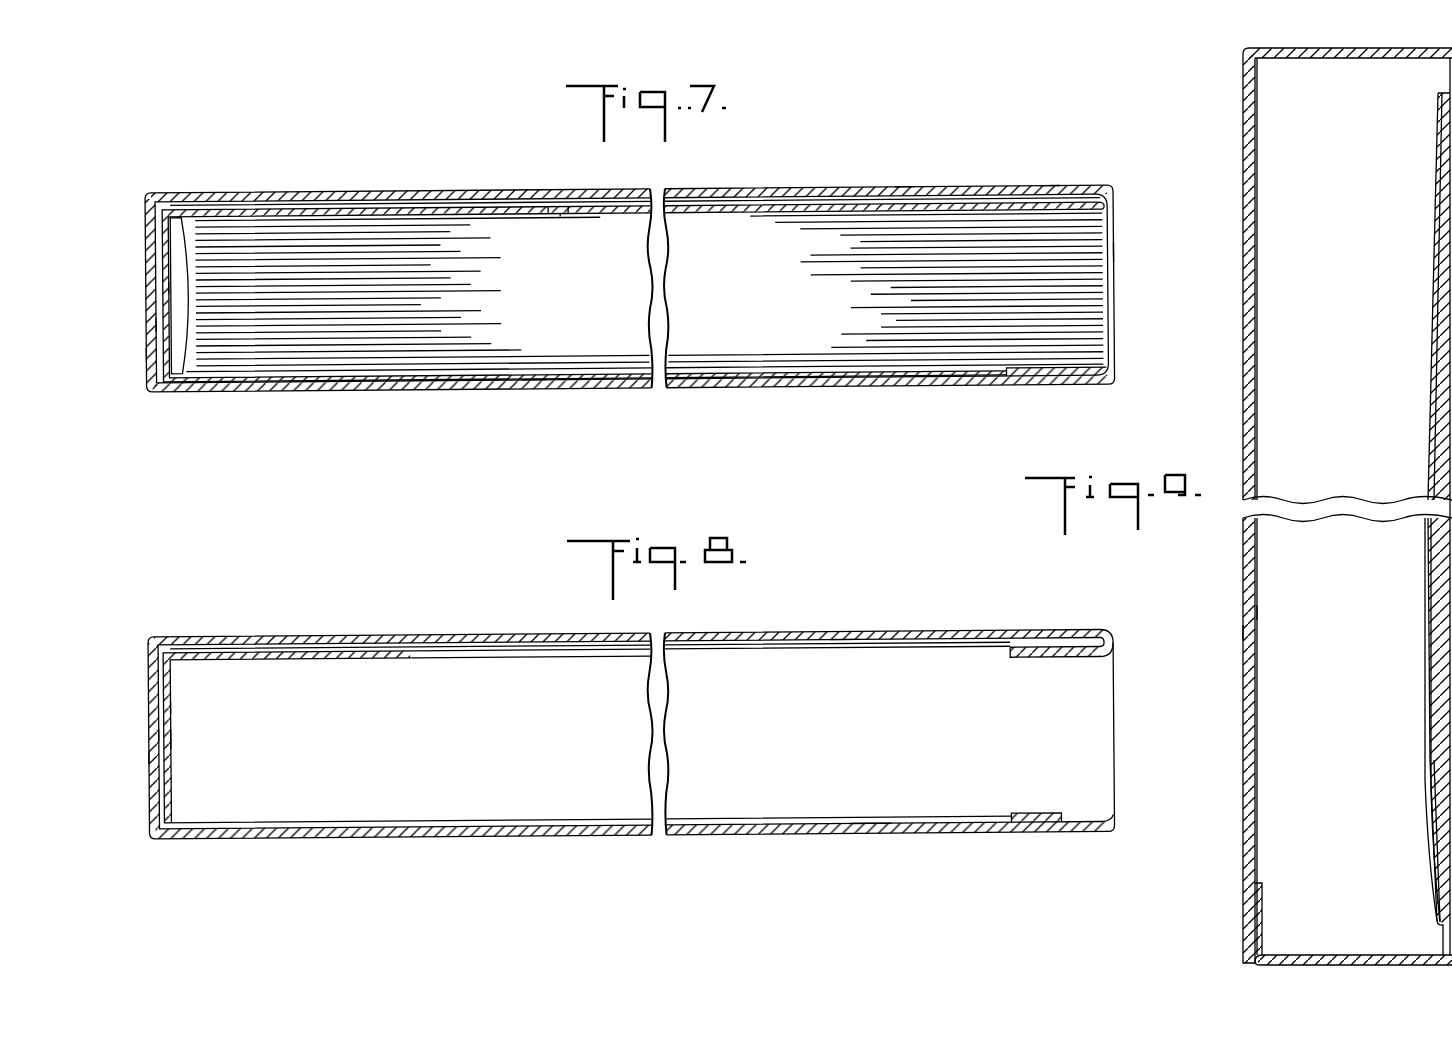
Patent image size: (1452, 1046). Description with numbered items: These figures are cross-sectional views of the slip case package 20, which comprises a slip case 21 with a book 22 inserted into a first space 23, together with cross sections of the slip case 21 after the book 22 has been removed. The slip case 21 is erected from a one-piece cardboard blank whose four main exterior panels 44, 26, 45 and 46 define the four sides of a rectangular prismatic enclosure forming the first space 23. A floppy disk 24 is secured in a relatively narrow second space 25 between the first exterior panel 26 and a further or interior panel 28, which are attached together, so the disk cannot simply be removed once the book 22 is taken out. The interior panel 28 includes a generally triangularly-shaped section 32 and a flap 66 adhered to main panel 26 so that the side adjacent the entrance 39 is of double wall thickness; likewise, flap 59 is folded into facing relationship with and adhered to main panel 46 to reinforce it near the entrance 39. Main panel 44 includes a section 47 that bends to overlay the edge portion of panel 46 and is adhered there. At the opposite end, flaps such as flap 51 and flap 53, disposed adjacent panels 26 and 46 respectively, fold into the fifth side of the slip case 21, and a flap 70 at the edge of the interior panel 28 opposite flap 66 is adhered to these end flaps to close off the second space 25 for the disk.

In FIG. 7, the slip case package 20 is at (1048, 192).
In FIG. 7, the slip case 21 is at (900, 193).
In FIG. 7, the book 22 is at (1078, 309).
In FIG. 7, the first space 23 is at (184, 267).
In FIG. 8, the first space 23 is at (856, 753).
In FIG. 9, the first space 23 is at (1351, 625).
In FIG. 7, the floppy disk 24 is at (568, 208).
In FIG. 8, the floppy disk 24 is at (845, 644).
In FIG. 9, the floppy disk 24 is at (1440, 555).
In FIG. 7, the second space 25 is at (331, 205).
In FIG. 8, the second space 25 is at (232, 649).
In FIG. 9, the second space 25 is at (1438, 778).
In FIG. 7, the first exterior panel 26 is at (287, 200).
In FIG. 8, the first exterior panel 26 is at (295, 642).
In FIG. 9, the first exterior panel 26 is at (1440, 672).
In FIG. 7, the interior panel 28 is at (228, 212).
In FIG. 8, the interior panel 28 is at (266, 661).
In FIG. 9, the interior panel 28 is at (1432, 812).
In FIG. 7, the triangularly-shaped section 32 is at (563, 218).
In FIG. 7, the entrance 39 is at (1130, 259).
In FIG. 9, the main exterior panel 44 is at (1275, 968).
In FIG. 9, the main exterior panel 45 is at (1392, 52).
In FIG. 7, the main exterior panel 46 is at (531, 390).
In FIG. 8, the main exterior panel 46 is at (868, 828).
In FIG. 9, the main exterior panel 46 is at (1247, 632).
In FIG. 9, the section 47 is at (1262, 900).
In FIG. 7, the flap 51 is at (148, 355).
In FIG. 8, the flap 51 is at (154, 758).
In FIG. 7, the flap 53 is at (156, 326).
In FIG. 8, the flap 53 is at (161, 735).
In FIG. 7, the flap 59 is at (1054, 385).
In FIG. 8, the flap 59 is at (1052, 822).
In FIG. 8, the flap 66 is at (1047, 665).
In FIG. 7, the flap 70 is at (166, 287).
In FIG. 8, the flap 70 is at (169, 708).